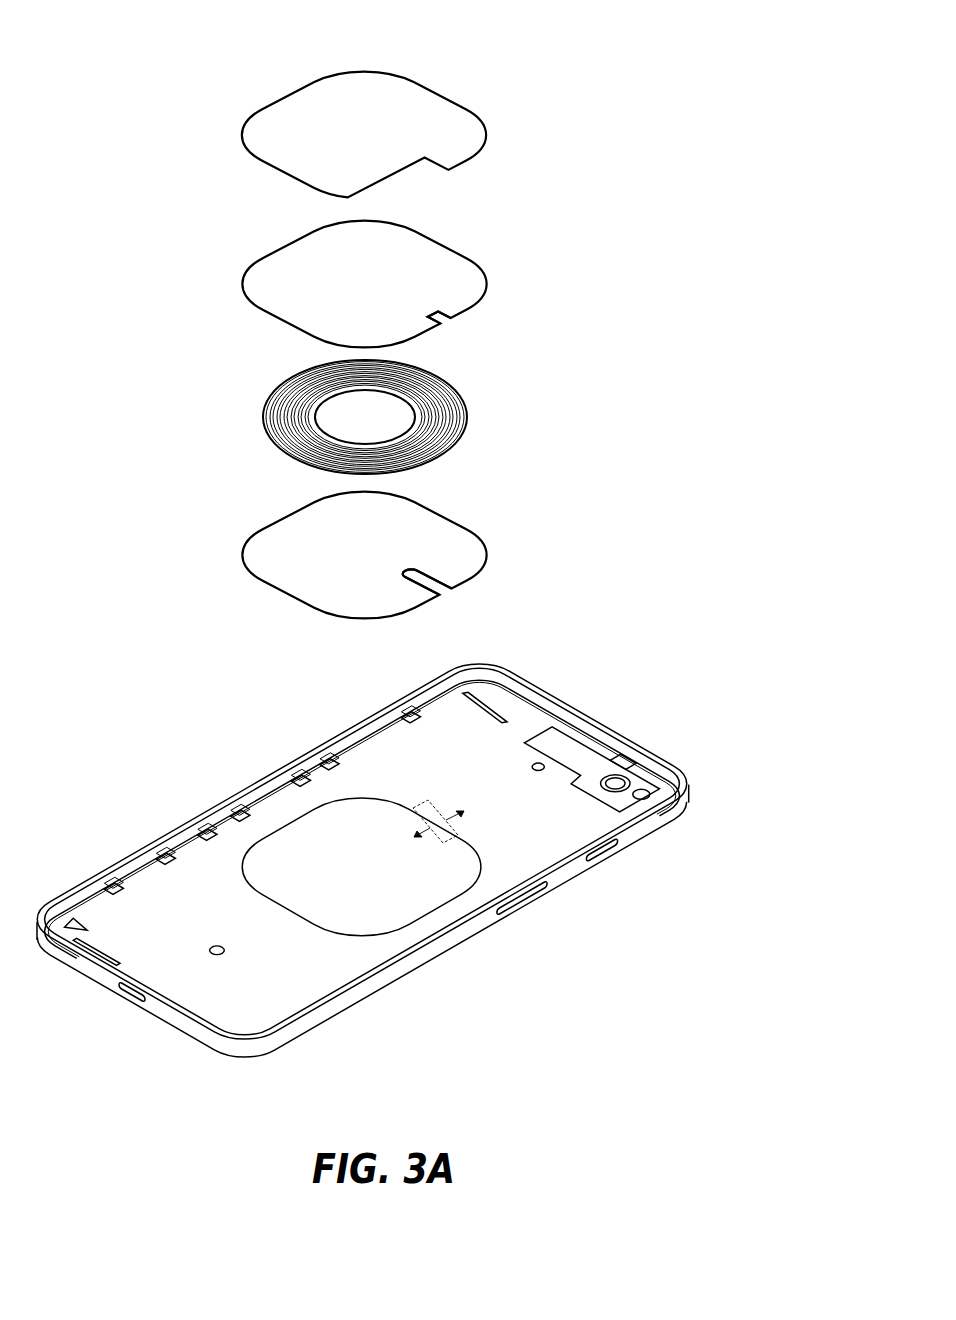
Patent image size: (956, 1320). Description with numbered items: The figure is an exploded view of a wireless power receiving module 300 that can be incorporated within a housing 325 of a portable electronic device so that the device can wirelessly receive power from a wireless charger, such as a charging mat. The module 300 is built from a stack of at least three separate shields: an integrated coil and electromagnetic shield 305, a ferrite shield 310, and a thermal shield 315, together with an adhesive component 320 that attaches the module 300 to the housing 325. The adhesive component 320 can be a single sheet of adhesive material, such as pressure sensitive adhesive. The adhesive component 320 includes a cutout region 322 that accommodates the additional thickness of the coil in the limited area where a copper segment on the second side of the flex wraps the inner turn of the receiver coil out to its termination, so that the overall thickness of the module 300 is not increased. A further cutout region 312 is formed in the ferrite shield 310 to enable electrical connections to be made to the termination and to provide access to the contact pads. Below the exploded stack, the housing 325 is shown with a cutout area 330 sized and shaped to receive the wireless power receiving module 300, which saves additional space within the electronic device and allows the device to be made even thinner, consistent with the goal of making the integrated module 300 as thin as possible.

The wireless power receiving module 300 is at (228, 44).
The integrated coil and electromagnetic shield 305 is at (465, 402).
The ferrite shield 310 is at (468, 260).
The cutout region 312 is at (443, 323).
The thermal shield 315 is at (480, 120).
The adhesive component 320 is at (447, 515).
The cutout region 322 is at (432, 578).
The housing 325 is at (605, 730).
The cutout area 330 is at (404, 898).